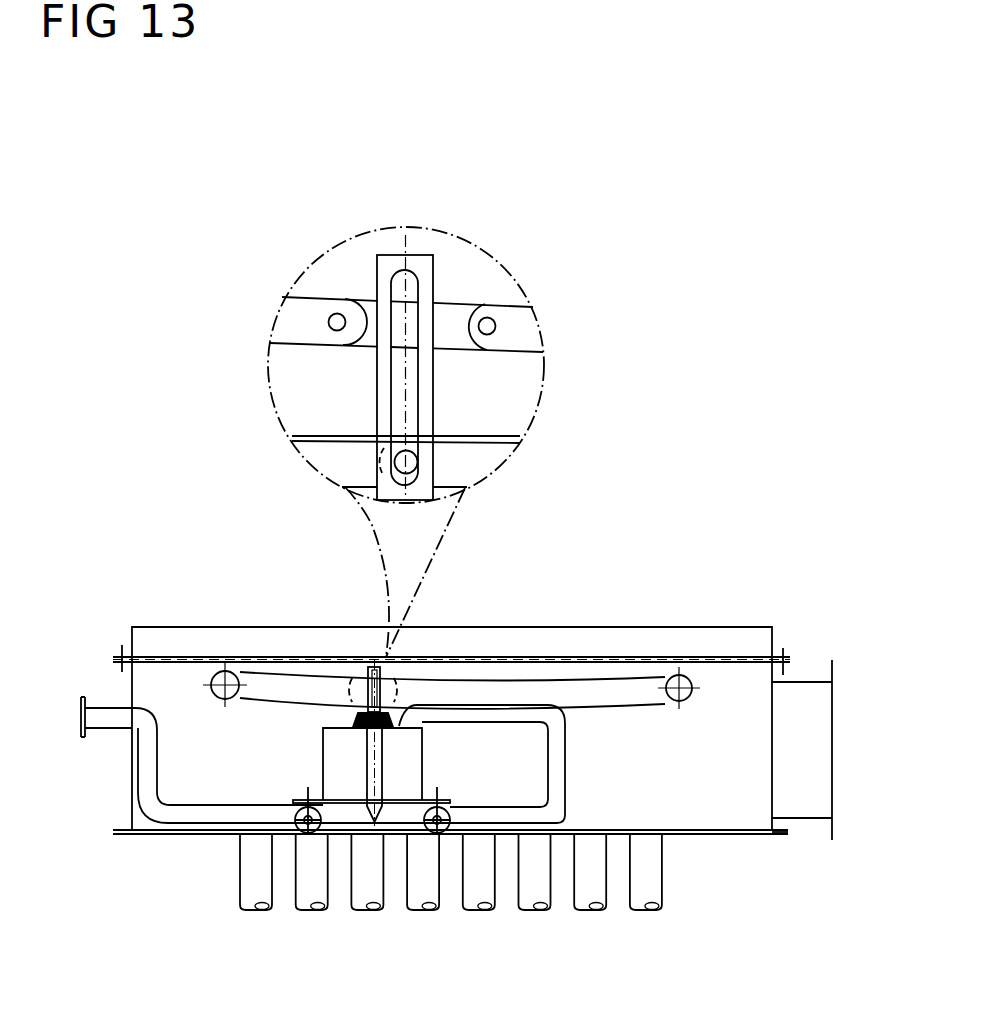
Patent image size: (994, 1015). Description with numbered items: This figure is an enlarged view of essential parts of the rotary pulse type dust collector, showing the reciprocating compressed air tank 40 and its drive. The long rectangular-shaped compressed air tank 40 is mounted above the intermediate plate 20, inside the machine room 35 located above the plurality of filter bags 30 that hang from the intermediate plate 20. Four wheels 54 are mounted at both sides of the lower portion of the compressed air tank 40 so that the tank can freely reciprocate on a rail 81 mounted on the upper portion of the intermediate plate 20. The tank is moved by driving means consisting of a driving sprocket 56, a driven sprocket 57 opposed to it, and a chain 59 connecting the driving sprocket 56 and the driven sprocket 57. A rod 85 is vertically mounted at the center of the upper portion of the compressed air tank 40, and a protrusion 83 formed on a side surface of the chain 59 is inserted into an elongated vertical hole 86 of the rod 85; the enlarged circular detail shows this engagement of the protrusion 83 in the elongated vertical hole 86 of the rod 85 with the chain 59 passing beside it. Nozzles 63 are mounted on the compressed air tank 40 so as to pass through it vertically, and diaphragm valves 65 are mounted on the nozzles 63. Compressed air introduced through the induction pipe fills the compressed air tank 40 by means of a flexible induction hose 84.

The intermediate plate 20 is at (788, 833).
The filter bags 30 is at (647, 892).
The machine room 35 is at (737, 755).
The compressed air tank 40 is at (413, 770).
The wheels 54 is at (447, 812).
The driving sprocket 56 is at (225, 671).
The driven sprocket 57 is at (673, 675).
The chain 59 is at (515, 310).
The nozzles 63 is at (367, 768).
The diaphragm valves 65 is at (350, 721).
The rail 81 is at (772, 838).
The protrusion 83 is at (413, 462).
The flexible induction hose 84 is at (560, 760).
The rod 85 is at (432, 425).
The elongated vertical hole 86 is at (410, 378).